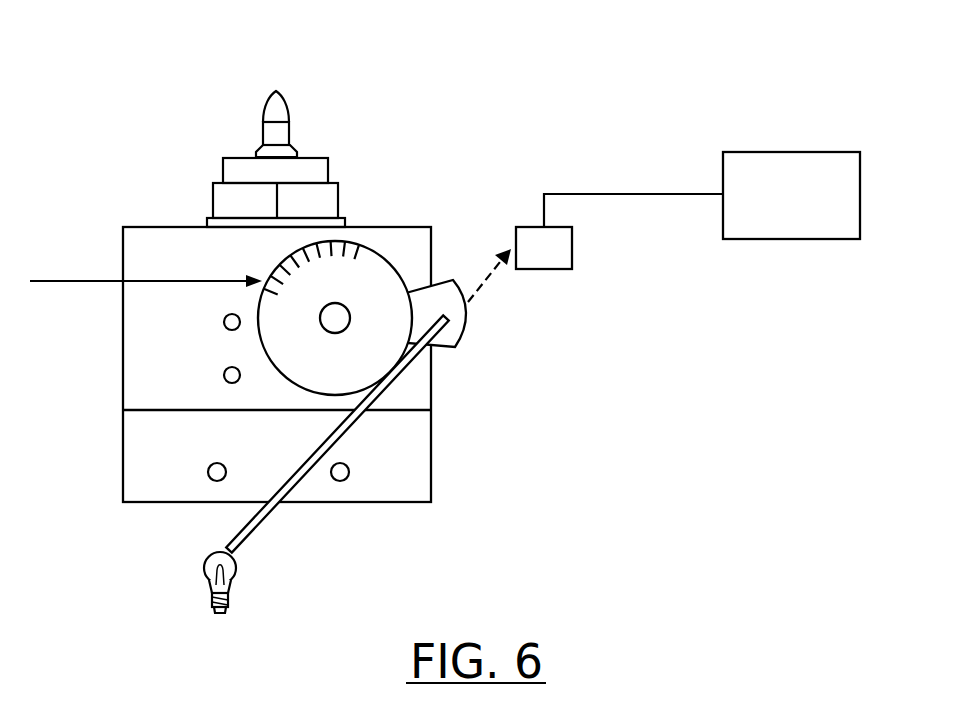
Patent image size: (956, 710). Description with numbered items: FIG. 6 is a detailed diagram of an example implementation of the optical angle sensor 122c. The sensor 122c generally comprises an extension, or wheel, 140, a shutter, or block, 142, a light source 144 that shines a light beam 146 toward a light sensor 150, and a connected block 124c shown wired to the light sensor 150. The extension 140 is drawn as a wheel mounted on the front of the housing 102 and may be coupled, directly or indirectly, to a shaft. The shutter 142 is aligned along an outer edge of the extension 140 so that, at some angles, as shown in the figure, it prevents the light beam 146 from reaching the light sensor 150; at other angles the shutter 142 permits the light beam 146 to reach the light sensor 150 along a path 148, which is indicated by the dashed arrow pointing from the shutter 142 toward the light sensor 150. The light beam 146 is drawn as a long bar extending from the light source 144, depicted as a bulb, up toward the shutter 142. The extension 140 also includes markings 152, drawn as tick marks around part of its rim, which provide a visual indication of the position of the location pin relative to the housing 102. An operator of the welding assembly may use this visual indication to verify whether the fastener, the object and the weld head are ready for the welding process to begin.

The sensor 122c is at (461, 66).
The housing 102 is at (433, 228).
The extension 140 is at (368, 243).
The shutter 142 is at (455, 348).
The light source 144 is at (203, 565).
The light beam 146 is at (270, 522).
The path 148 is at (478, 287).
The light sensor 150 is at (572, 247).
The markings 152 is at (72, 280).
The controller 124c is at (765, 152).